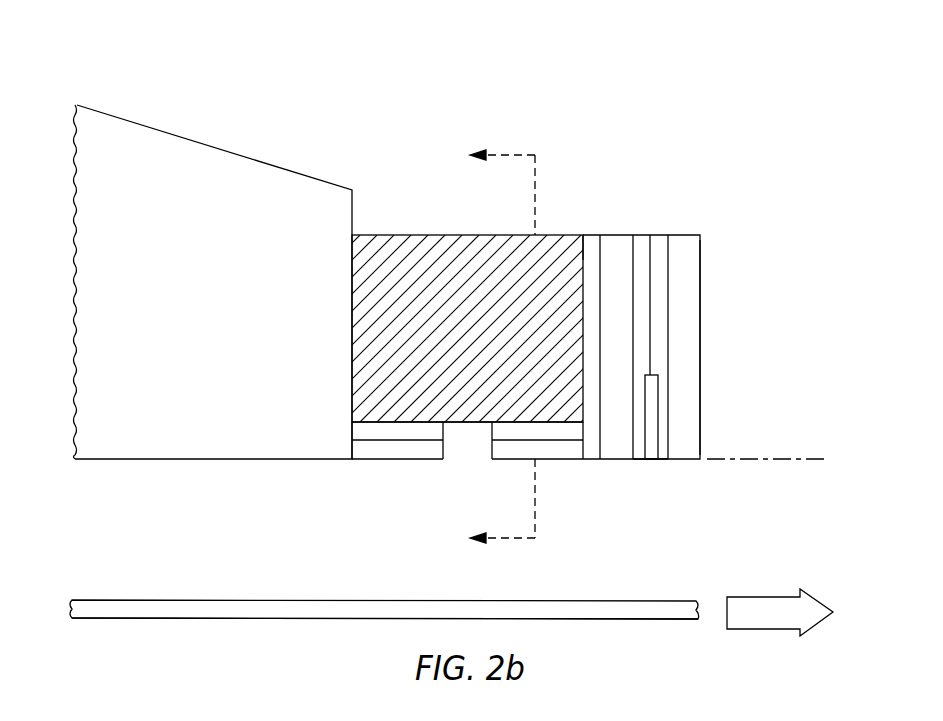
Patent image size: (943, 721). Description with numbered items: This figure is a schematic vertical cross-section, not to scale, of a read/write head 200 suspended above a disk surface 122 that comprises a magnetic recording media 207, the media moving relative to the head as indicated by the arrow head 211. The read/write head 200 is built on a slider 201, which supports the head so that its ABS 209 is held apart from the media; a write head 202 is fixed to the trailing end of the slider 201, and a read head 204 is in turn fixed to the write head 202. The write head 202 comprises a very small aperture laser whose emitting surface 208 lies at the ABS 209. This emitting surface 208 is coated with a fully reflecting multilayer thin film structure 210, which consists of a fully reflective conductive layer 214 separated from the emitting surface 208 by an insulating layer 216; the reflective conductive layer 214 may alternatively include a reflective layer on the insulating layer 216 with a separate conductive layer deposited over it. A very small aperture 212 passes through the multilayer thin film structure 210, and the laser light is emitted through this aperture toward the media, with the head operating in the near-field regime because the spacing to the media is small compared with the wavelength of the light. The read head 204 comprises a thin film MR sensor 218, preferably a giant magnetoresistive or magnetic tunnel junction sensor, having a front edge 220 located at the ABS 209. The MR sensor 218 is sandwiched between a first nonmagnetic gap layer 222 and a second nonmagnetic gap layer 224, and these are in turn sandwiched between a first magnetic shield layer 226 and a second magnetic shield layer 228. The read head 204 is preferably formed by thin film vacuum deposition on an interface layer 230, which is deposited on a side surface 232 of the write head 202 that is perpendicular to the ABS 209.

The read/write head 200 is at (432, 117).
The slider 201 is at (193, 141).
The write head 202 is at (385, 213).
The read head 204 is at (712, 148).
The disk surface 122 is at (216, 600).
The magnetic recording media 207 is at (290, 619).
The emitting surface 208 is at (383, 424).
The ABS 209 is at (770, 460).
The multilayer thin film structure 210 is at (291, 420).
The arrow head 211 is at (758, 630).
The very small aperture 212 is at (492, 465).
The reflective conductive layer 214 is at (352, 444).
The insulating layer 216 is at (352, 425).
The MR sensor 218 is at (652, 400).
The front edge 220 is at (650, 460).
The first nonmagnetic gap layer 222 is at (640, 235).
The second nonmagnetic gap layer 224 is at (658, 235).
The first magnetic shield layer 226 is at (619, 235).
The second magnetic shield layer 228 is at (688, 235).
The interface layer 230 is at (591, 460).
The side surface 232 is at (584, 251).